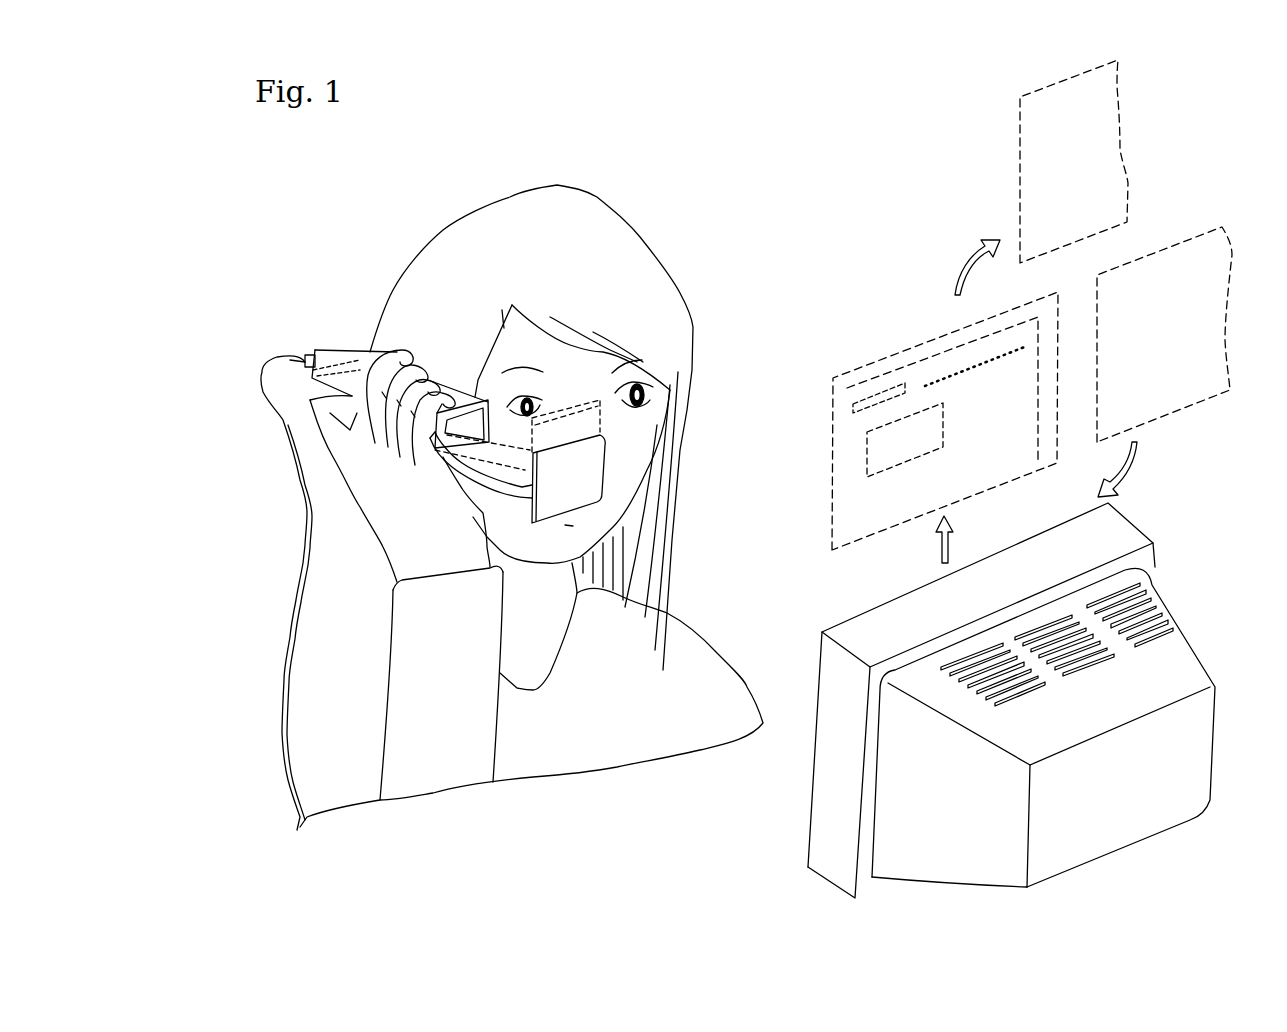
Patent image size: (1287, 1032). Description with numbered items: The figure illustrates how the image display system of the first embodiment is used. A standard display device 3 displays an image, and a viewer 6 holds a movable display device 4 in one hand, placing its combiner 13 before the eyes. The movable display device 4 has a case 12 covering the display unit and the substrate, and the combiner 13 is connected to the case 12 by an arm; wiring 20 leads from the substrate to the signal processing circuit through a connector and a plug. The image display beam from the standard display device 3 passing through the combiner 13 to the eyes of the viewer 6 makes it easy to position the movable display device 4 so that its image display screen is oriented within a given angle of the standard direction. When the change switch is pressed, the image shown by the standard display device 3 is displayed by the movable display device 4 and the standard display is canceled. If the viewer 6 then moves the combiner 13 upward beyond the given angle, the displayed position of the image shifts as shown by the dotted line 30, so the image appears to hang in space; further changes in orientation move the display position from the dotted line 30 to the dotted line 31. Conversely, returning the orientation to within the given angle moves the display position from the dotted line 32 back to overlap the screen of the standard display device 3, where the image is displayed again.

The standard display device 3 is at (868, 622).
The movable display device 4 is at (446, 385).
The viewer 6 is at (653, 278).
The case 12 is at (343, 350).
The combiner 13 is at (587, 488).
The wiring 20 is at (298, 557).
The dotted line 30 is at (918, 345).
The dotted line 31 is at (1020, 217).
The dotted line 32 is at (1193, 235).